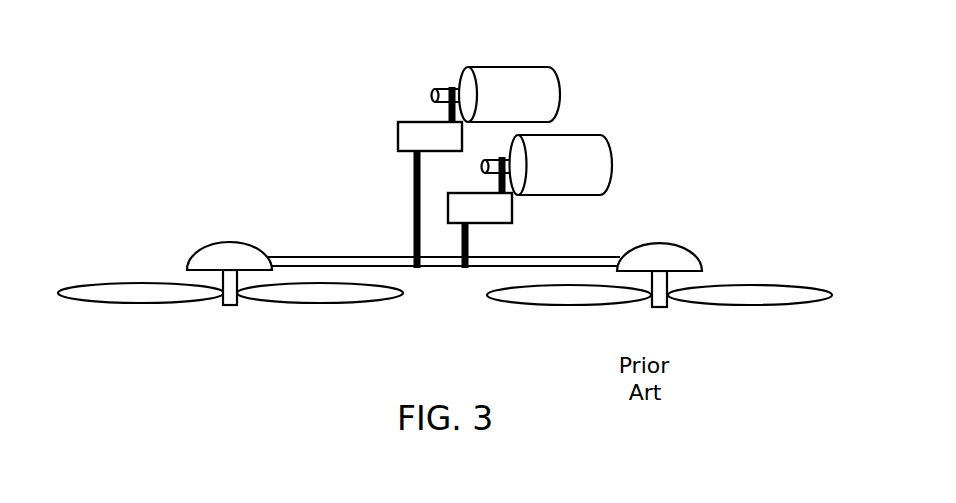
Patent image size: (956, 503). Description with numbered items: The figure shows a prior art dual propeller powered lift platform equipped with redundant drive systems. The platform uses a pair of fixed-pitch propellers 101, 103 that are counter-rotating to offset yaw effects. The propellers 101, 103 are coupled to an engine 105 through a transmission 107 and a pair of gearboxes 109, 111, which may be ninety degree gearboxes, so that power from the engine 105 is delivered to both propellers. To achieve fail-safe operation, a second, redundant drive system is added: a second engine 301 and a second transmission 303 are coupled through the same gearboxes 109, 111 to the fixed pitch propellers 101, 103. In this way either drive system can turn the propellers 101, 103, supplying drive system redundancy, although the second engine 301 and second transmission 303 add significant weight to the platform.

The fixed-pitch propeller 101 is at (137, 277).
The fixed-pitch propeller 103 is at (749, 279).
The engine 105 is at (525, 97).
The transmission 107 is at (398, 135).
The gearbox 109 is at (208, 257).
The gearbox 111 is at (680, 258).
The second engine 301 is at (580, 152).
The second transmission 303 is at (482, 208).